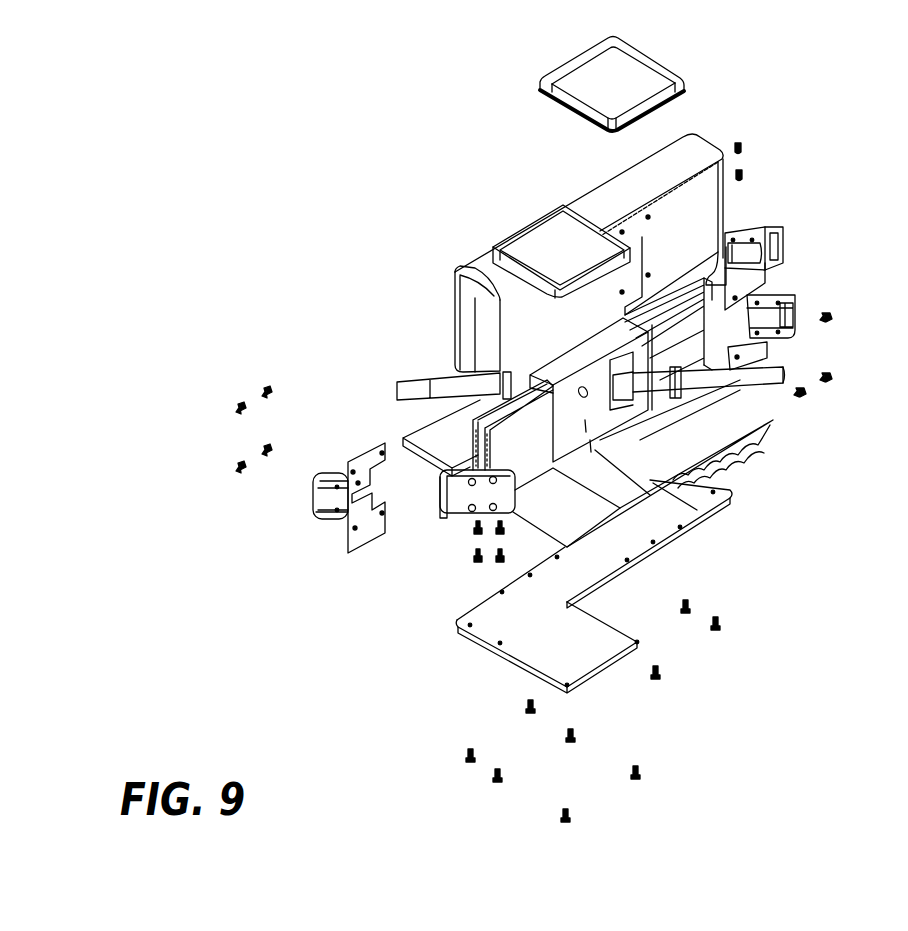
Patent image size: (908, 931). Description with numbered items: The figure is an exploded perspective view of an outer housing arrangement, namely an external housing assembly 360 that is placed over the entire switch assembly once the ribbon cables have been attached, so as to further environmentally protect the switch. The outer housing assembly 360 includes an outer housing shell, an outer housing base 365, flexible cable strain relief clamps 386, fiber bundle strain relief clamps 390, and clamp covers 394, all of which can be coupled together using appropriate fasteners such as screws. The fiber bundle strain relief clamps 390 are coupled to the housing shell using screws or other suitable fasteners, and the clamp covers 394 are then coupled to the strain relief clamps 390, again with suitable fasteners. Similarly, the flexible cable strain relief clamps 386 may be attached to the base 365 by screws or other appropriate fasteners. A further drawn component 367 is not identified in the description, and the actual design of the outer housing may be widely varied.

The flexible cable strain relief clamp 386 is at (620, 82).
The outer housing assembly 360 is at (510, 202).
The cover 367 is at (452, 273).
The clamp cover 394 is at (783, 222).
The fiber bundle strain relief clamp 390 is at (797, 291).
The outer housing base 365 is at (523, 643).